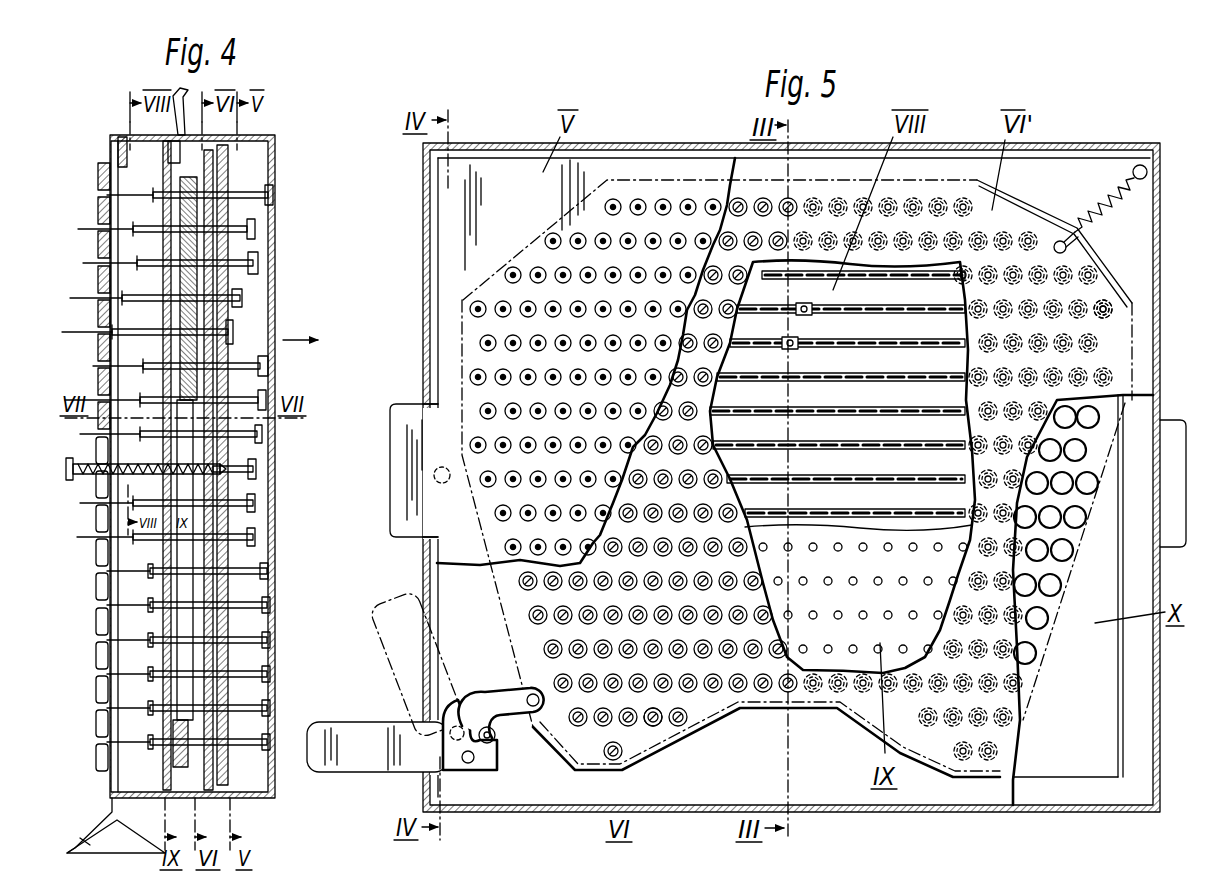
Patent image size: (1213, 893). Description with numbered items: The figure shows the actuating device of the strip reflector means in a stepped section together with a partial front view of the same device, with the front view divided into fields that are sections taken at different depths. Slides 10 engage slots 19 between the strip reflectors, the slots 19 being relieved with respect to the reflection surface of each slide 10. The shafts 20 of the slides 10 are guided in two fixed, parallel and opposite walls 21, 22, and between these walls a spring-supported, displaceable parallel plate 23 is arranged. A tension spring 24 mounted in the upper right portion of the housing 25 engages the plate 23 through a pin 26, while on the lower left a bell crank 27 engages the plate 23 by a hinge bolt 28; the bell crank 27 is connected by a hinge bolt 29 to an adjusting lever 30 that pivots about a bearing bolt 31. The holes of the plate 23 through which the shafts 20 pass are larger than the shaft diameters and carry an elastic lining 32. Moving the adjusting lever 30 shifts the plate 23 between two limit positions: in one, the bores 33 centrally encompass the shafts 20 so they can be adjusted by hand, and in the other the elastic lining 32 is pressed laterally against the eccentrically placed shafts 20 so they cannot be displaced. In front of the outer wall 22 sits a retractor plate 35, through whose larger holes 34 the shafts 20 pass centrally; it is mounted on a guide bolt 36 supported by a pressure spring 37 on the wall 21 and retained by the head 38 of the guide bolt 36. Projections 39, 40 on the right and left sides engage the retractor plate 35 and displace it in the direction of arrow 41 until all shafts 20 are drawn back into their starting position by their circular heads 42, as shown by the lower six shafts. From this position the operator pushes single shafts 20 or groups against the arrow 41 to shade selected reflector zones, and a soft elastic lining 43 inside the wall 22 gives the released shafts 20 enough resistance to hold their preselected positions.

In FIG. 4, the slide 10 is at (88, 226).
In FIG. 5, the slide 10 is at (878, 310).
In FIG. 4, the slot 19 is at (100, 233).
In FIG. 5, the slot 19 is at (888, 316).
In FIG. 4, the shaft 20 is at (240, 710).
In FIG. 5, the shaft 20 is at (684, 722).
In FIG. 4, the wall 21 is at (170, 158).
In FIG. 4, the wall 22 is at (262, 140).
In FIG. 4, the plate 23 is at (240, 310).
In FIG. 5, the tension spring 24 is at (1093, 217).
In FIG. 5, the housing 25 is at (1137, 150).
In FIG. 5, the pin 26 is at (1068, 248).
In FIG. 5, the bell crank 27 is at (500, 697).
In FIG. 5, the hinge bolt 28 is at (527, 695).
In FIG. 5, the hinge bolt 29 is at (467, 764).
In FIG. 5, the adjusting lever 30 is at (354, 757).
In FIG. 5, the bearing bolt 31 is at (496, 739).
In FIG. 4, the elastic lining 32 is at (173, 347).
In FIG. 5, the elastic lining 32 is at (650, 725).
In FIG. 5, the bore 33 is at (658, 722).
In FIG. 4, the hole 34 is at (230, 207).
In FIG. 4, the retractor plate 35 is at (214, 527).
In FIG. 4, the guide bolt 36 is at (237, 463).
In FIG. 4, the pressure spring 37 is at (78, 462).
In FIG. 4, the head 38 is at (73, 472).
In FIG. 5, the projection 39 is at (405, 430).
In FIG. 5, the projection 40 is at (1176, 432).
In FIG. 4, the arrow 41 is at (300, 356).
In FIG. 4, the circular head 42 is at (257, 263).
In FIG. 5, the circular head 42 is at (1043, 624).
In FIG. 4, the lining 43 is at (200, 185).